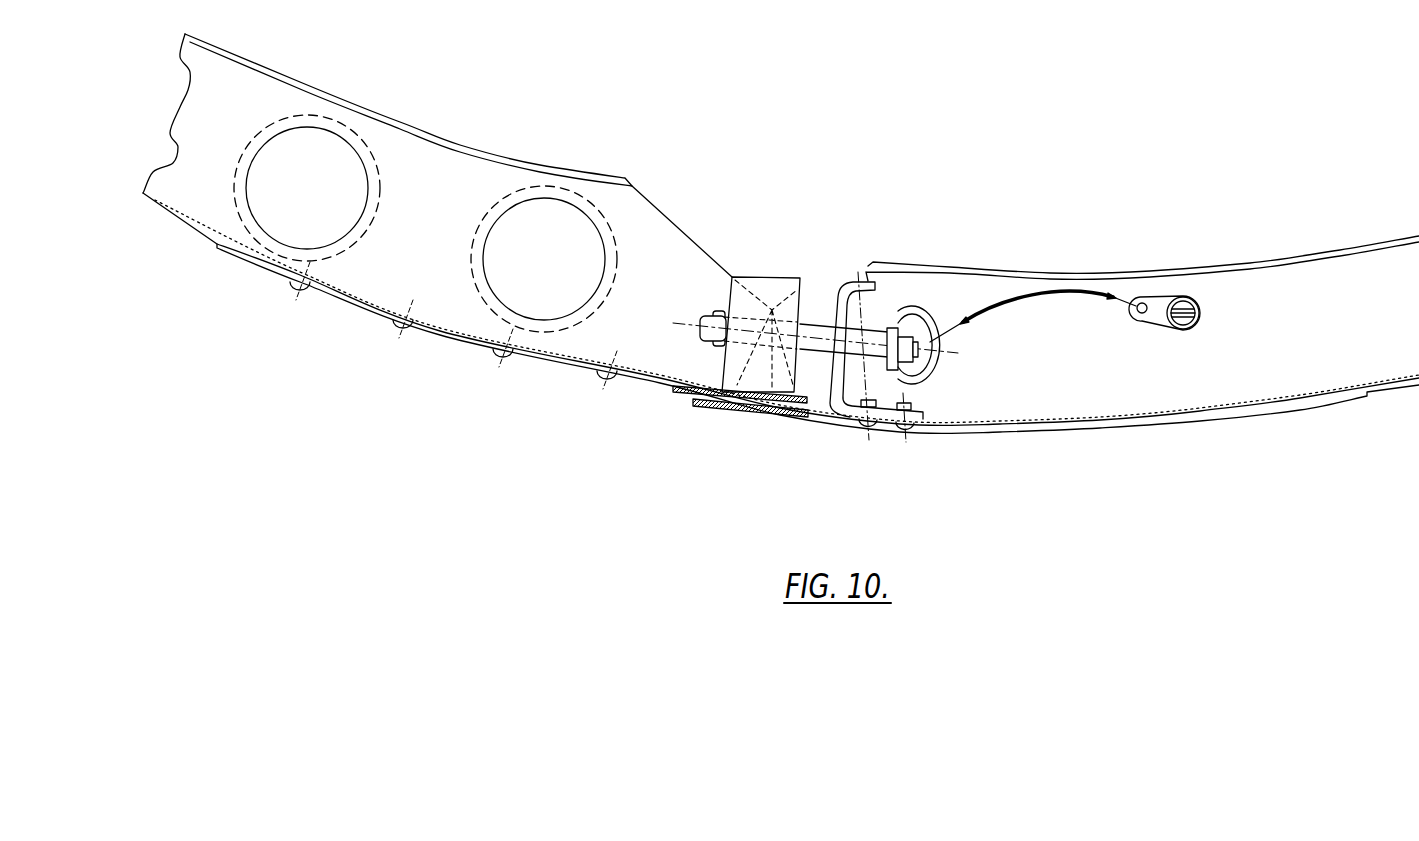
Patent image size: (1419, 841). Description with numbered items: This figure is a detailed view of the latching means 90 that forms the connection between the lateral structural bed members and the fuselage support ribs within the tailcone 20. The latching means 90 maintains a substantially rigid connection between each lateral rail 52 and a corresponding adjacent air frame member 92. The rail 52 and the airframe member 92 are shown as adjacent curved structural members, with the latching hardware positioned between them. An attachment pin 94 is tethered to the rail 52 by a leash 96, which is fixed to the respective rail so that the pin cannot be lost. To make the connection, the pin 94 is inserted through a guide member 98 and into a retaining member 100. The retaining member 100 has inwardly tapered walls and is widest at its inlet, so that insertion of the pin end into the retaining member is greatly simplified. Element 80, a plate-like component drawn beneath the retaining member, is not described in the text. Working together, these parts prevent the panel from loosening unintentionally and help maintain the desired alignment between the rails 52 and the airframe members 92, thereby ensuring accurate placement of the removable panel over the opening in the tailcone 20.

The tailcone section 20 is at (967, 432).
The lateral rail 52 is at (1097, 268).
The laminated shim plates 80 is at (782, 414).
The latching means 90 is at (845, 240).
The air frame member 92 is at (462, 141).
The attachment pin 94 is at (916, 293).
The leash 96 is at (1062, 320).
The guide member 98 is at (847, 284).
The retaining member 100 is at (763, 280).